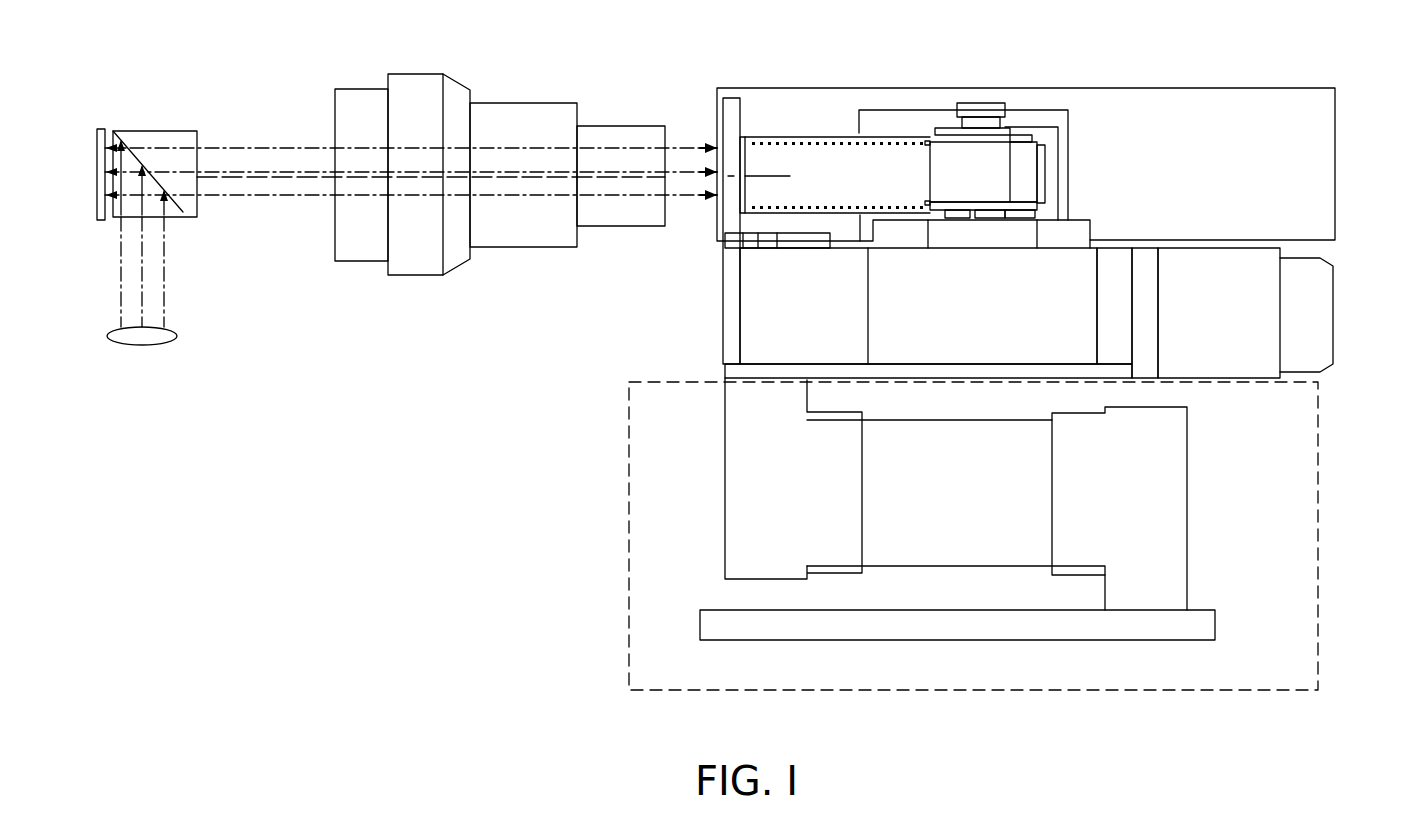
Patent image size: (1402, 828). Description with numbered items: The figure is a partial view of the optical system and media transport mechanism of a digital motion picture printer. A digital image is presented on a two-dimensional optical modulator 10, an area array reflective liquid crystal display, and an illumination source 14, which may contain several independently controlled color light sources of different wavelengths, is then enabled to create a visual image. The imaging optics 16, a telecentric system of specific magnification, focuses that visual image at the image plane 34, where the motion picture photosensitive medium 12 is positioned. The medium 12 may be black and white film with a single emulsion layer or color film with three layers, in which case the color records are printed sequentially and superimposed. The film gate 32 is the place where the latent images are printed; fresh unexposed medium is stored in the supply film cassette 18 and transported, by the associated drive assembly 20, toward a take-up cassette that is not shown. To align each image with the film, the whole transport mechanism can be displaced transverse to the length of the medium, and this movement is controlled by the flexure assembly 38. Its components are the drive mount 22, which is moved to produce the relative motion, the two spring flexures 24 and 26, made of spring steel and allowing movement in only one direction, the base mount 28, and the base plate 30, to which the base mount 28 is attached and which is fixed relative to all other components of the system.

The two-dimensional optical modulator 10 is at (97, 138).
The motion picture photosensitive medium 12 is at (812, 192).
The illumination source 14 is at (153, 345).
The imaging optics 16 is at (452, 78).
The film cassette 18 is at (1095, 87).
The drive assembly 20 is at (1333, 293).
The drive mount 22 is at (726, 460).
The spring flexure 24 is at (908, 422).
The spring flexure 26 is at (1032, 567).
The base mount 28 is at (1188, 485).
The base plate 30 is at (1215, 635).
The film gate 32 is at (715, 120).
The image plane 34 is at (715, 217).
The flexure assembly 38 is at (629, 518).